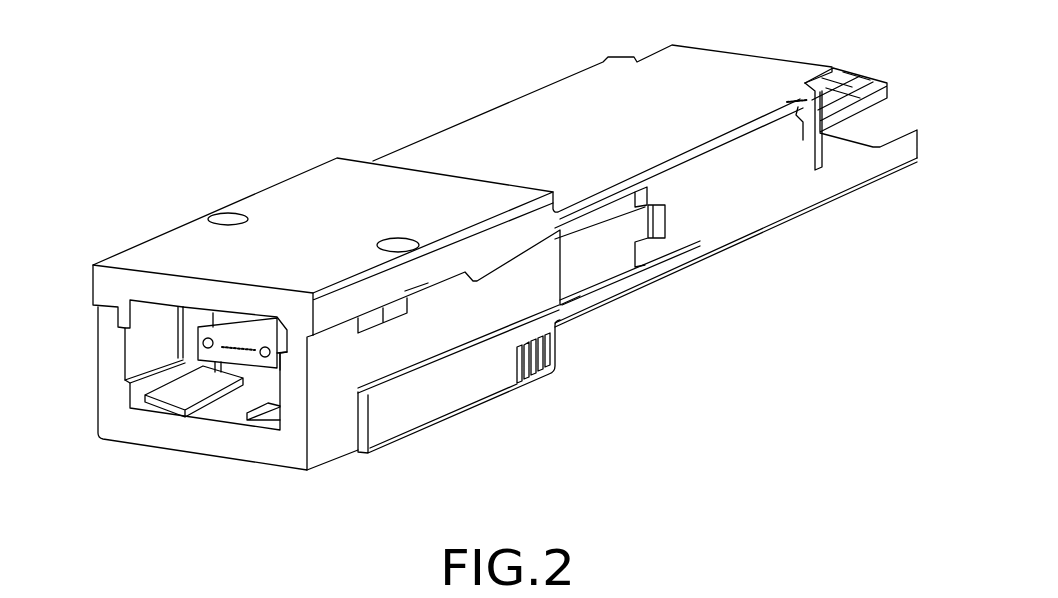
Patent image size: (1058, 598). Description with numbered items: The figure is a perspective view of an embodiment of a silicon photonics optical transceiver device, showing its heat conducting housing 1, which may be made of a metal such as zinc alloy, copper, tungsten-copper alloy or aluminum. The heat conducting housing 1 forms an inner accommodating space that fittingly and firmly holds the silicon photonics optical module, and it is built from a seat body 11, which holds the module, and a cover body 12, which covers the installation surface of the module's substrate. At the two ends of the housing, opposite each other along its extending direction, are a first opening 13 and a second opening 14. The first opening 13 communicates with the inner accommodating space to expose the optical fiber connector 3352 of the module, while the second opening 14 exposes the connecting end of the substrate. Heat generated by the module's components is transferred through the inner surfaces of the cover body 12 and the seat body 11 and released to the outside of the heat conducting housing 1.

The heat conducting housing 1 is at (492, 106).
The seat body 11 is at (320, 178).
The cover body 12 is at (478, 402).
The first opening 13 is at (125, 355).
The second opening 14 is at (855, 122).
The optical fiber connector 3352 is at (208, 332).